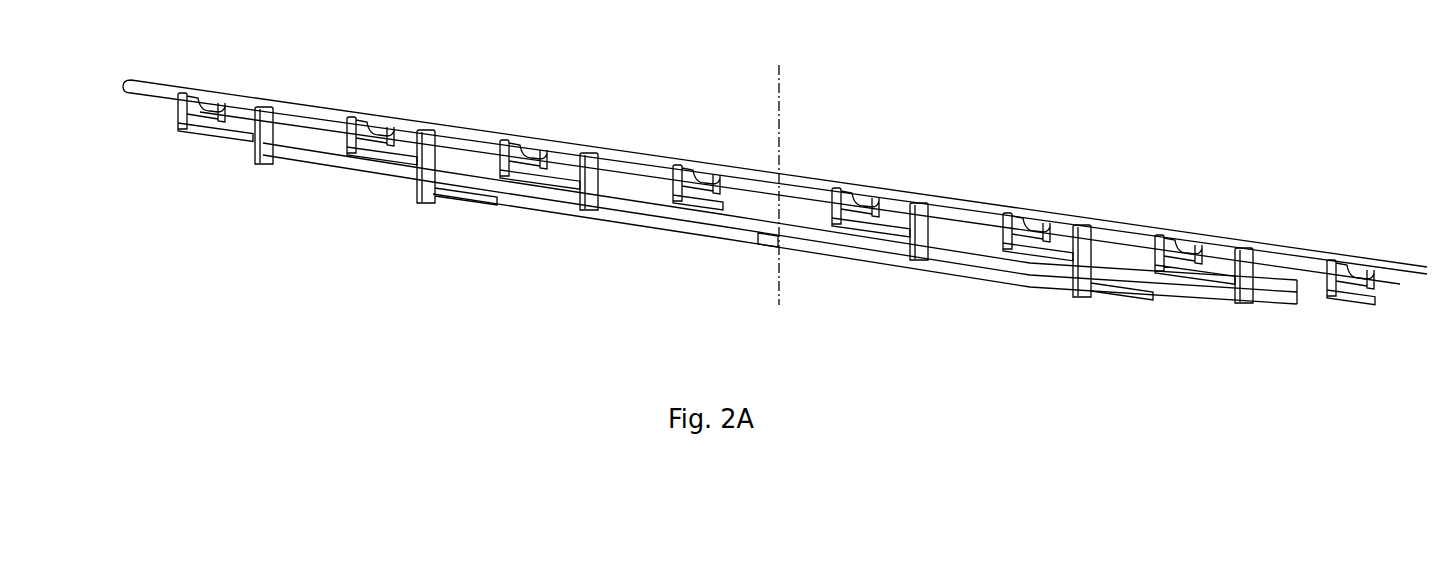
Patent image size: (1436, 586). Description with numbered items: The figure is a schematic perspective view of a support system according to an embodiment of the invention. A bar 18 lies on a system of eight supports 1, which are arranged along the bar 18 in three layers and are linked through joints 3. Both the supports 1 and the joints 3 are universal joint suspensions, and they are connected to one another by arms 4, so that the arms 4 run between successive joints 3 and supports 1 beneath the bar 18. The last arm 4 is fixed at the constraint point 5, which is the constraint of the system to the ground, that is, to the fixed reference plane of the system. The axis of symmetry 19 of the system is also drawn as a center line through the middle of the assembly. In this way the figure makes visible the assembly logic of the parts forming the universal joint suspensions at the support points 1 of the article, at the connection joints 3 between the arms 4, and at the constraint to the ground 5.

The support 1 is at (205, 82).
The joint 3 is at (263, 140).
The arm 4 is at (330, 143).
The constraint point 5 is at (762, 255).
The bar 18 is at (158, 85).
The axis of symmetry 19 is at (770, 305).